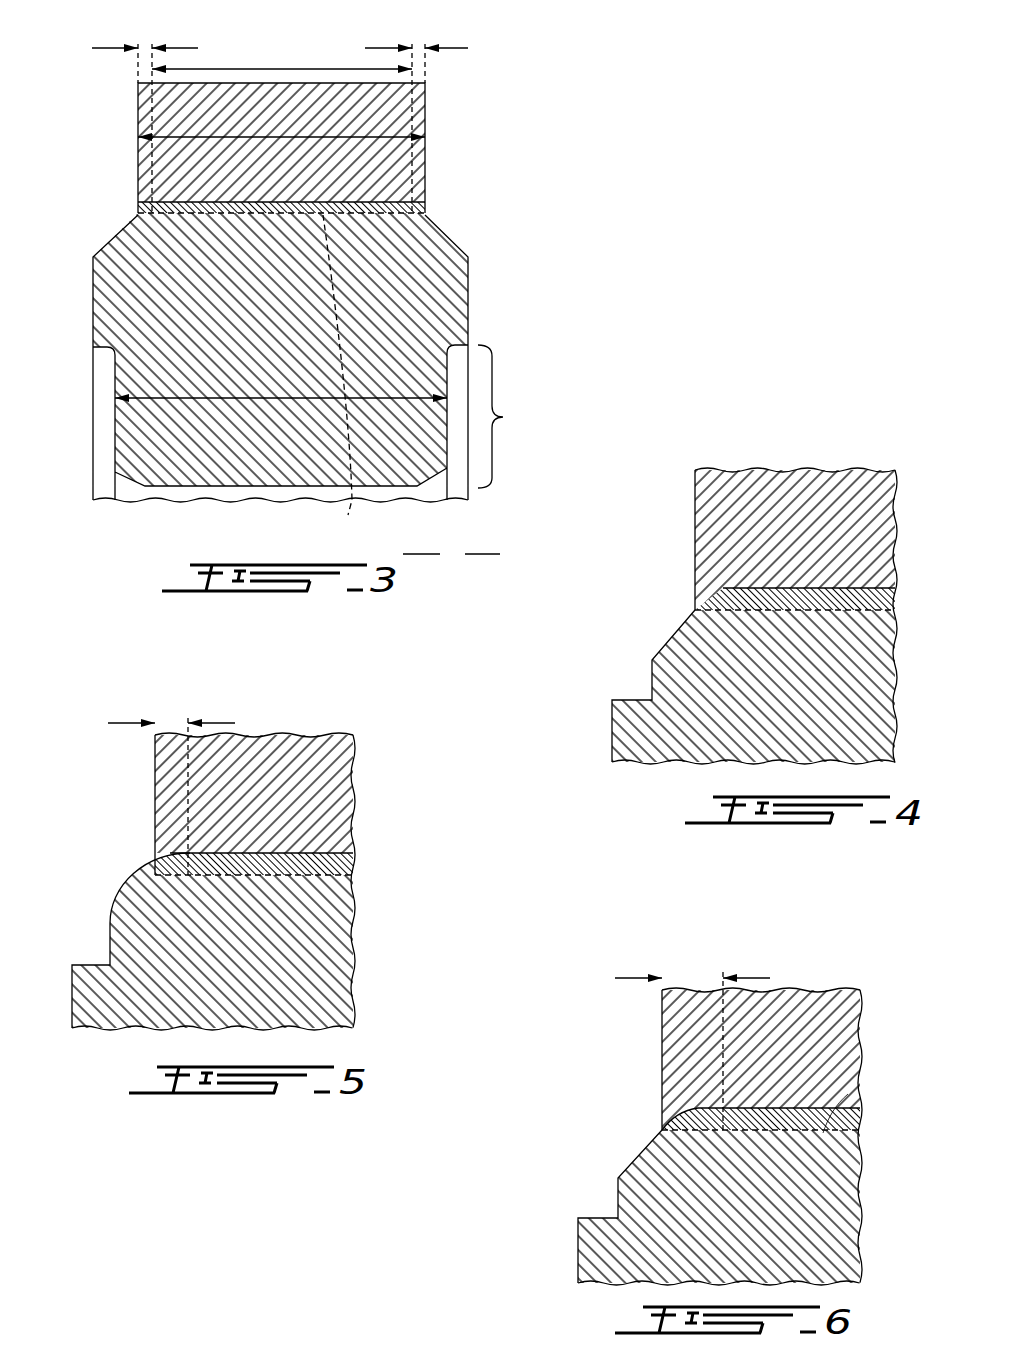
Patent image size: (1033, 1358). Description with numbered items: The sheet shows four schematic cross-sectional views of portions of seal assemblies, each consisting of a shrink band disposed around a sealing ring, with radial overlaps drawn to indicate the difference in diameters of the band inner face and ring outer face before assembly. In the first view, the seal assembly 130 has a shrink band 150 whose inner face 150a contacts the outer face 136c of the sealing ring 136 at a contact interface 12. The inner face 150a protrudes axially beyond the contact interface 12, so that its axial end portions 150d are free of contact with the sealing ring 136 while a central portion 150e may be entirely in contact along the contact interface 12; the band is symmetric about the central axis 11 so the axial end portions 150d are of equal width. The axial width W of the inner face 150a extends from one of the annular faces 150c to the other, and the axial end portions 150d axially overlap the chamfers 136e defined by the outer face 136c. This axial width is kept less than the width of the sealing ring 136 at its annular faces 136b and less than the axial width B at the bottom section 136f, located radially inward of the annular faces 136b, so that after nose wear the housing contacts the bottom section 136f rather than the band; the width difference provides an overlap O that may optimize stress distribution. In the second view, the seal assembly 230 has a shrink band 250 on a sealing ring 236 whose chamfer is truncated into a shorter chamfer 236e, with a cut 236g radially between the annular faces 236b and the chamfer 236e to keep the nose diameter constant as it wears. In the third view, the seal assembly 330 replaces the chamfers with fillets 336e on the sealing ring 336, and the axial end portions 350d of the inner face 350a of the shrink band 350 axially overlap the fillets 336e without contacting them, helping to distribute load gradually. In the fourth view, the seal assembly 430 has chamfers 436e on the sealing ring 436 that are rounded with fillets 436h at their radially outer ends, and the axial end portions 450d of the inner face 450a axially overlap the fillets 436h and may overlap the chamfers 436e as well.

In FIG. 3, the central axis 11 is at (455, 553).
In FIG. 3, the contact interface 12 is at (233, 225).
In FIG. 3, the seal assembly 130 is at (577, 123).
In FIG. 3, the sealing ring 136 is at (532, 363).
In FIG. 3, the annular faces 136b is at (477, 297).
In FIG. 3, the outer face 136c is at (210, 202).
In FIG. 3, the chamfers 136e is at (448, 229).
In FIG. 3, the bottom section 136f is at (519, 416).
In FIG. 3, the shrink band 150 is at (437, 115).
In FIG. 3, the inner face 150a is at (347, 378).
In FIG. 3, the annular faces 150c is at (138, 162).
In FIG. 3, the axial end portions 150d is at (147, 44).
In FIG. 3, the central portion 150e is at (283, 68).
In FIG. 3, the axial width W is at (222, 136).
In FIG. 3, the overlap O is at (150, 232).
In FIG. 3, the axial width B is at (280, 398).
In FIG. 4, the seal assembly 230 is at (723, 447).
In FIG. 4, the sealing ring 236 is at (807, 672).
In FIG. 4, the annular faces 236b is at (612, 728).
In FIG. 4, the chamfer 236e is at (678, 633).
In FIG. 4, the cut 236g is at (635, 690).
In FIG. 4, the shrink band 250 is at (805, 515).
In FIG. 5, the seal assembly 330 is at (410, 803).
In FIG. 5, the sealing ring 336 is at (265, 940).
In FIG. 5, the fillets 336e is at (125, 884).
In FIG. 5, the shrink band 350 is at (300, 767).
In FIG. 5, the inner face 350a is at (335, 884).
In FIG. 5, the axial end portions 350d is at (171, 722).
In FIG. 6, the seal assembly 430 is at (547, 1193).
In FIG. 6, the sealing ring 436 is at (790, 1202).
In FIG. 6, the chamfers 436e is at (642, 1133).
In FIG. 6, the fillets 436h is at (698, 1108).
In FIG. 6, the inner face 450a is at (848, 1094).
In FIG. 6, the axial end portions 450d is at (691, 978).